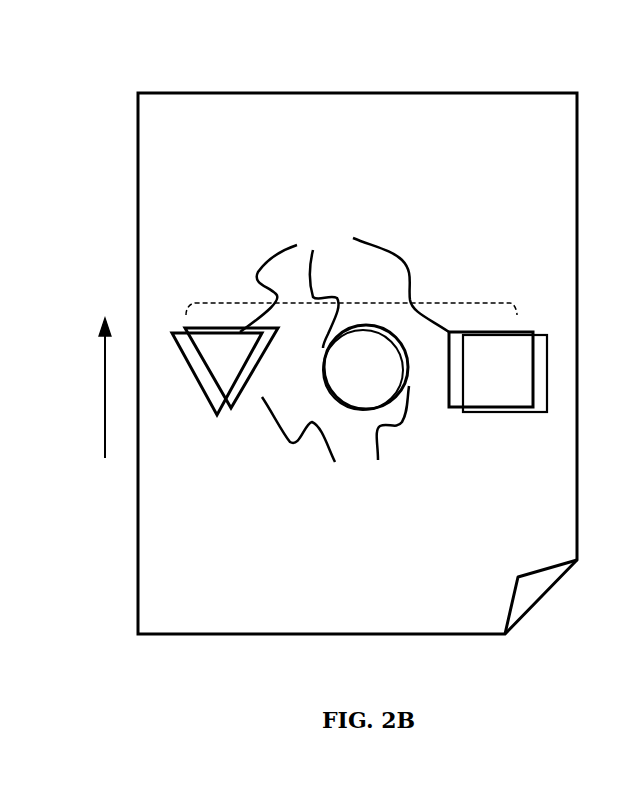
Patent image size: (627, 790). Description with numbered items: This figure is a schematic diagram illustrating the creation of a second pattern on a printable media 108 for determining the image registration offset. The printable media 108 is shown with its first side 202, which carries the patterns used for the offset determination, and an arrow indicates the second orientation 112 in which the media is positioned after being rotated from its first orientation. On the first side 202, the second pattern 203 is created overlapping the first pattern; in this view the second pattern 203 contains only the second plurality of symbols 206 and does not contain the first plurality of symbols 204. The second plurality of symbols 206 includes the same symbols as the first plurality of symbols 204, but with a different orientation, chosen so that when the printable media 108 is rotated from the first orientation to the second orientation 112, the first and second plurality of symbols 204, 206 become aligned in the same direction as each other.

The printable media 108 is at (357, 92).
The second orientation 112 is at (105, 414).
The first side 202 is at (502, 141).
The second pattern 203 is at (358, 303).
The first plurality of symbols 204 is at (463, 412).
The second plurality of symbols 206 is at (344, 344).